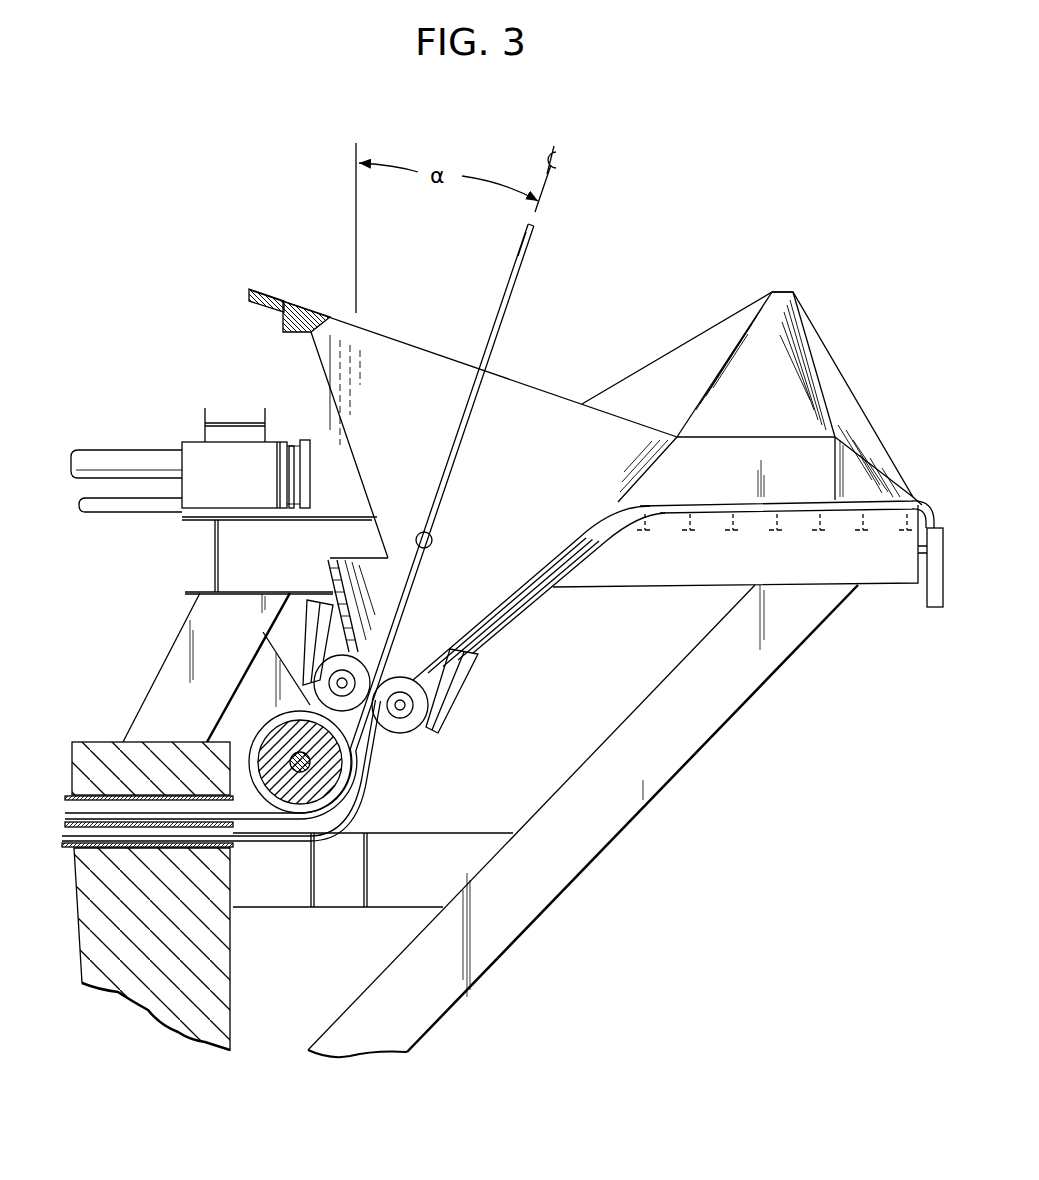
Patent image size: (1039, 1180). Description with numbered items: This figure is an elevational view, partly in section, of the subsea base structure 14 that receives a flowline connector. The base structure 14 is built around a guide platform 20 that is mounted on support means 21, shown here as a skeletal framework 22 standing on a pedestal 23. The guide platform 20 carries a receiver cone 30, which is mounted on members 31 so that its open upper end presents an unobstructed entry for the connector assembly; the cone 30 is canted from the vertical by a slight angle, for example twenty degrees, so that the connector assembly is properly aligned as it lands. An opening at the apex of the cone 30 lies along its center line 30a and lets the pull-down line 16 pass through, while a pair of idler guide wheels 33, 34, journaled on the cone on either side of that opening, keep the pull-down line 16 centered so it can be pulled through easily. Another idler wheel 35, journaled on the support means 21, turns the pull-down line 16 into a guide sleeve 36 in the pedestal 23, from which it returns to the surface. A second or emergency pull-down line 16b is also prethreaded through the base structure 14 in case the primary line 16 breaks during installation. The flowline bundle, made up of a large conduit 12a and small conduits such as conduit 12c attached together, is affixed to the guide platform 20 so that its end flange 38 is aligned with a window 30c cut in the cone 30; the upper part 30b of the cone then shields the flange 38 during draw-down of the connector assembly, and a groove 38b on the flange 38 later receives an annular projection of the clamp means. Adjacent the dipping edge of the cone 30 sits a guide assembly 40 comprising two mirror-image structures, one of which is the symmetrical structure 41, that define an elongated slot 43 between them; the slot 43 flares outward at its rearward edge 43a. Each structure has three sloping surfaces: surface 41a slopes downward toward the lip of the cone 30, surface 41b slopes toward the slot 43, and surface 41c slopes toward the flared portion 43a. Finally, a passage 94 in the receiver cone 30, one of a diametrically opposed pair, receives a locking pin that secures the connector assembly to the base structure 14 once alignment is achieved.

The large conduit 12a is at (155, 449).
The small conduit 12c is at (160, 514).
The base structure 14 is at (205, 360).
The pull-down line 16 is at (504, 327).
The emergency pull-down line 16b is at (367, 775).
The guide platform 20 is at (197, 556).
The support means 21 is at (598, 887).
The skeletal framework 22 is at (490, 959).
The pedestal 23 is at (236, 961).
The receiver cone 30 is at (506, 629).
The center line of cone 30a is at (521, 264).
The upper part of cone 30b is at (264, 289).
The window 30c is at (300, 334).
The members 31 is at (657, 584).
The idler guide wheel 33 is at (367, 657).
The idler guide wheel 34 is at (398, 733).
The idler wheel 35 is at (282, 722).
The guide sleeve 36 is at (181, 796).
The flange 38 is at (302, 440).
The groove 38b is at (295, 443).
The guide assembly 40 is at (867, 358).
The symmetrical structure 41 is at (783, 292).
The sloping surface 41a is at (683, 397).
The sloping surface 41b is at (783, 402).
The sloping surface 41c is at (871, 445).
The elongated slot 43 is at (719, 503).
The flared portion of slot 43a is at (874, 479).
The passage 94 is at (434, 539).